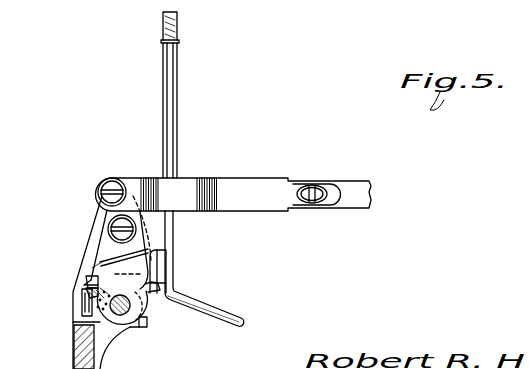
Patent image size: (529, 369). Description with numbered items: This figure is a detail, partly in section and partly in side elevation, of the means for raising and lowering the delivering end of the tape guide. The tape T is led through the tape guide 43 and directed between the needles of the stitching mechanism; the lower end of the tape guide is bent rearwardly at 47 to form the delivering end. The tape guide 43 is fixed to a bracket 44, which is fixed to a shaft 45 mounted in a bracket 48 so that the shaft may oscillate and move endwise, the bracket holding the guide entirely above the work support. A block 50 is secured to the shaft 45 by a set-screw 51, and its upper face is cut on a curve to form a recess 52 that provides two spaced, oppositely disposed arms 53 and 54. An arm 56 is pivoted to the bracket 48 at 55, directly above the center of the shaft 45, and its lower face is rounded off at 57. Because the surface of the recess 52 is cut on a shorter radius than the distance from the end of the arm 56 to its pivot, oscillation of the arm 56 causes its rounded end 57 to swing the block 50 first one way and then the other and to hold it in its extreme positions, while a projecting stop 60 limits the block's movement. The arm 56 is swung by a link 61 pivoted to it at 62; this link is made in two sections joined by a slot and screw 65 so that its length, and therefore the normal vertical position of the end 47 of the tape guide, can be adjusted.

The tape T is at (178, 22).
The tape guide 43 is at (179, 88).
The rearwardly bent lower end 47 is at (224, 318).
The bracket 48 is at (74, 340).
The link 61 is at (239, 187).
The slot and screw 65 is at (315, 184).
The pivot 62 is at (113, 178).
The pivot 55 is at (137, 226).
The arm 56 is at (105, 255).
The bracket 44 is at (153, 258).
The arm 54 is at (150, 283).
The projecting stop 60 is at (86, 270).
The recess 52 is at (90, 265).
The arm 53 is at (87, 284).
The set-screw 51 is at (82, 296).
The block 50 is at (120, 318).
The rounded lower end 57 is at (147, 294).
The shaft 45 is at (144, 328).